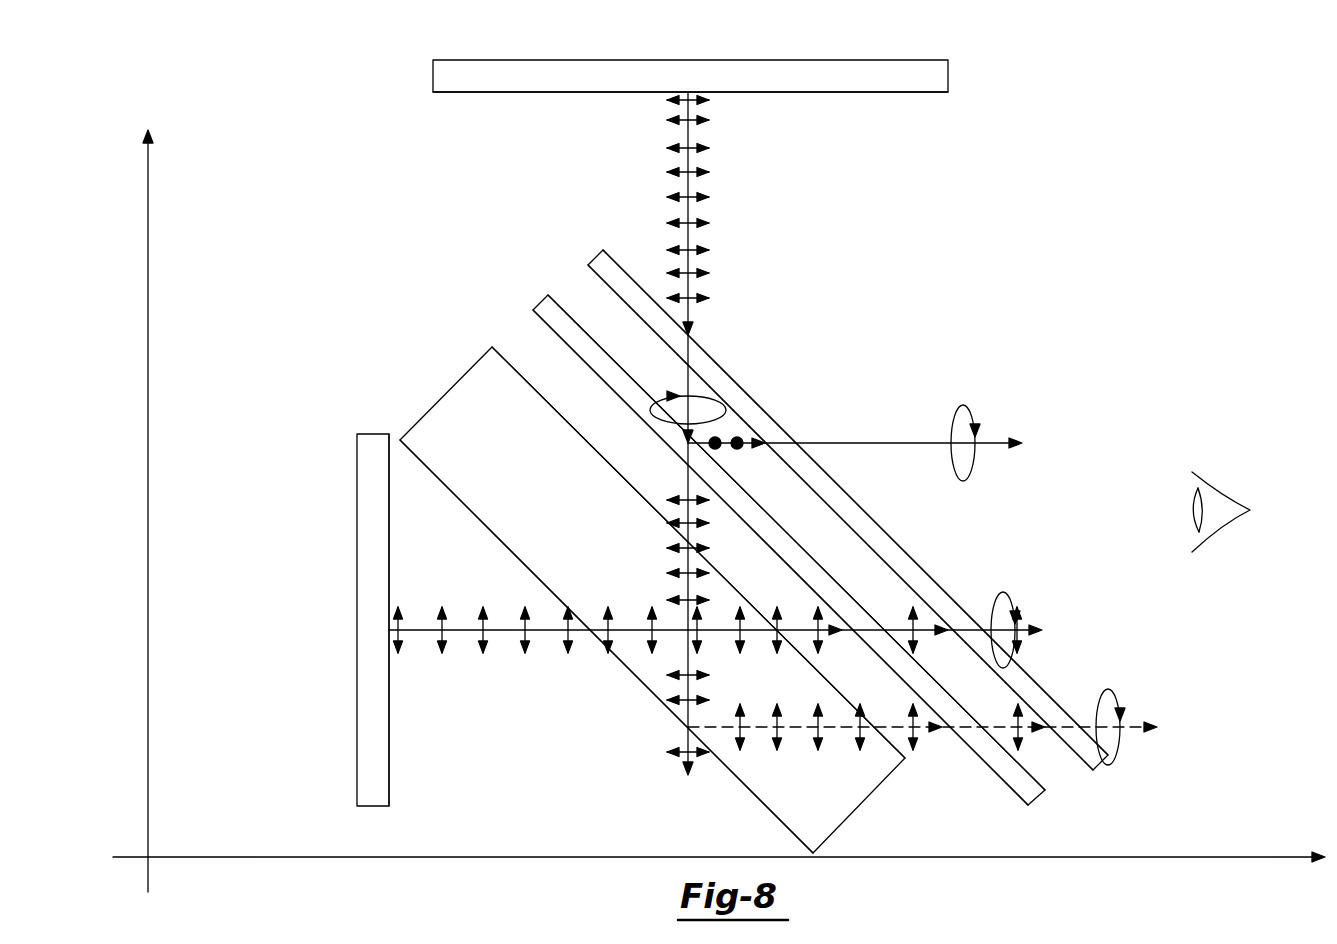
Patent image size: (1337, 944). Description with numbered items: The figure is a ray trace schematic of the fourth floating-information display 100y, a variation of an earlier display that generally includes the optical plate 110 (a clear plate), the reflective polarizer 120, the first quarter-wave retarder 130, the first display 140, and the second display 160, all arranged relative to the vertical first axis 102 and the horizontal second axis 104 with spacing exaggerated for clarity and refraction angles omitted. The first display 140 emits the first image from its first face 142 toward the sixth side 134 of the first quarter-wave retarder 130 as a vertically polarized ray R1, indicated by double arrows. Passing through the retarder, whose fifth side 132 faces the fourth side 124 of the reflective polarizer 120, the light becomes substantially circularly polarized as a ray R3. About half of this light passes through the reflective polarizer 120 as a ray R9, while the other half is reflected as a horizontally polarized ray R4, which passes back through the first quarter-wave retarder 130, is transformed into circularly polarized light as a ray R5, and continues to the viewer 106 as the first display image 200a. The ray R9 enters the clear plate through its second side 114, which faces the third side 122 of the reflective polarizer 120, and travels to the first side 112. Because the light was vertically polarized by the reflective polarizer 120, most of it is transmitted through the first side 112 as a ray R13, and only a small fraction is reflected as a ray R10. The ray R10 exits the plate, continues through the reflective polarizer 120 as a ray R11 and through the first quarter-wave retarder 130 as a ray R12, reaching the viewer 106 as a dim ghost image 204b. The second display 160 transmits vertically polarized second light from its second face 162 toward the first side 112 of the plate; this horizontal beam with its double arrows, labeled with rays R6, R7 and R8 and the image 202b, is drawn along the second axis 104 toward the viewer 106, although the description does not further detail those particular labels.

The fourth floating-information display 100y is at (300, 88).
The first axis 102 is at (128, 511).
The second axis 104 is at (723, 874).
The viewer 106 is at (1222, 500).
The optical plate 110 is at (446, 392).
The first side 112 is at (475, 565).
The second side 114 is at (622, 474).
The reflective polarizer 120 is at (535, 305).
The third side 122 is at (557, 334).
The fourth side 124 is at (642, 377).
The first quarter-wave retarder 130 is at (592, 256).
The fifth side 132 is at (610, 292).
The sixth side 134 is at (633, 278).
The first display 140 is at (537, 60).
The first face 142 is at (867, 92).
The second display 160 is at (357, 497).
The second face 162 is at (389, 758).
The first display image 200a is at (883, 443).
The second output ray 202b is at (742, 634).
The ghost image 204b is at (949, 730).
The ray R1 is at (702, 431).
The ray R3 is at (688, 411).
The ray R4 is at (729, 455).
The ray R5 is at (982, 443).
The ray segment R6 is at (525, 633).
The ray segment R7 is at (823, 633).
The ray segment R8 is at (1025, 630).
The ray R9 is at (700, 550).
The ray R10 is at (827, 723).
The ray R11 is at (1003, 723).
The ray R12 is at (1130, 727).
The ray R13 is at (689, 741).